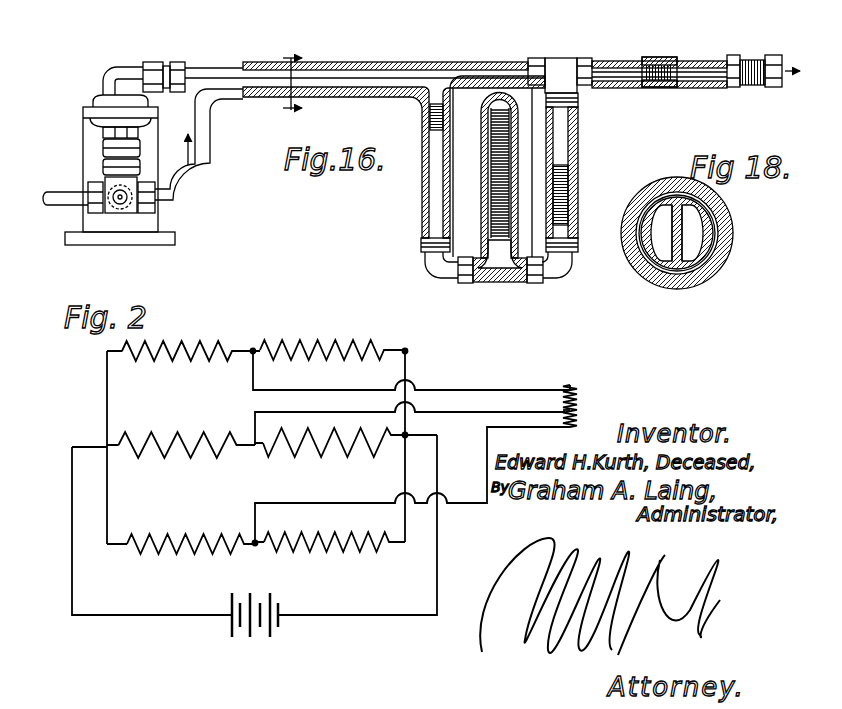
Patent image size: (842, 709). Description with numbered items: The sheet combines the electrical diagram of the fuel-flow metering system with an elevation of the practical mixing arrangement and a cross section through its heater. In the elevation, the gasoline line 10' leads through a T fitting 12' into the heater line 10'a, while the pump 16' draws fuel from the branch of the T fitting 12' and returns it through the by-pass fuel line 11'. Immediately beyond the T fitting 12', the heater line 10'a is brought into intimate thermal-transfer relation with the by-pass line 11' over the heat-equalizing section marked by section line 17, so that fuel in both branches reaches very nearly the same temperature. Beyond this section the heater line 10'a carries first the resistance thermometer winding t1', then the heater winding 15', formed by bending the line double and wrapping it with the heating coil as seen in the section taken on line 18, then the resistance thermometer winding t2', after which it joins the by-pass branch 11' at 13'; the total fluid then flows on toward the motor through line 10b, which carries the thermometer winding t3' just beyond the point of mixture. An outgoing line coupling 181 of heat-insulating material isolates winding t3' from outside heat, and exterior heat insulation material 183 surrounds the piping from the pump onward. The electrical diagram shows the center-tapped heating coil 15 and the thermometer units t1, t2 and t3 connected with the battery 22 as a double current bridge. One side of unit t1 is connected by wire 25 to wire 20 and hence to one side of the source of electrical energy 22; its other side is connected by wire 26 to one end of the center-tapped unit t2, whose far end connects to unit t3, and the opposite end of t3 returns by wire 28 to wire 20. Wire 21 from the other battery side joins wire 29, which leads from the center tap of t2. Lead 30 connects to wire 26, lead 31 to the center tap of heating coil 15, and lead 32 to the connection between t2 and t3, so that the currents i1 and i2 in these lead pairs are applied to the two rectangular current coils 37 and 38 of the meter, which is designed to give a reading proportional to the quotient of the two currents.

In FIG. 16, the exterior heat insulation material 183 is at (100, 3).
In FIG. 18, the exterior heat insulation material 183 is at (653, 280).
In FIG. 16, the by-pass fuel line 11' is at (315, 63).
In FIG. 16, the section line 17 is at (283, 84).
In FIG. 16, the junction of lines 10a' and 11' 13' is at (565, 63).
In FIG. 16, the outgoing fuel line 10b is at (693, 58).
In FIG. 16, the thermometer winding t3' is at (659, 60).
In FIG. 16, the outgoing line coupling 181 is at (748, 52).
In FIG. 16, the pump 16' is at (102, 170).
In FIG. 16, the T fitting 12' is at (121, 225).
In FIG. 16, the gasoline line 10' is at (54, 176).
In FIG. 16, the heater line 10'a is at (205, 144).
In FIG. 18, the heater line 10'a is at (681, 262).
In FIG. 16, the resistance thermometer winding t1' is at (405, 117).
In FIG. 16, the resistance thermometer winding t2' is at (583, 190).
In FIG. 16, the heater winding 15' is at (426, 176).
In FIG. 18, the heater winding 15' is at (703, 233).
In FIG. 16, the heating coil 18 is at (482, 125).
In FIG. 2, the wire 29 is at (107, 407).
In FIG. 2, the center-tapped resistance thermometer coil t2 is at (181, 452).
In FIG. 2, the resistance thermometer unit t3 is at (329, 341).
In FIG. 2, the wire 28 is at (408, 363).
In FIG. 2, the lead 32 is at (475, 386).
In FIG. 2, the current i1 is at (509, 377).
In FIG. 2, the current coil 38 is at (580, 388).
In FIG. 2, the current coil 37 is at (578, 412).
In FIG. 2, the lead 31 is at (473, 412).
In FIG. 2, the heating coil 15 is at (272, 461).
In FIG. 2, the lead 30 is at (549, 427).
In FIG. 2, the current i2 is at (509, 439).
In FIG. 2, the wire 25 is at (403, 513).
In FIG. 2, the wire 26 is at (255, 547).
In FIG. 2, the resistance thermometer unit t1 is at (330, 556).
In FIG. 2, the wire 20 is at (435, 574).
In FIG. 2, the wire 21 is at (72, 511).
In FIG. 2, the source of electrical energy 22 is at (244, 634).